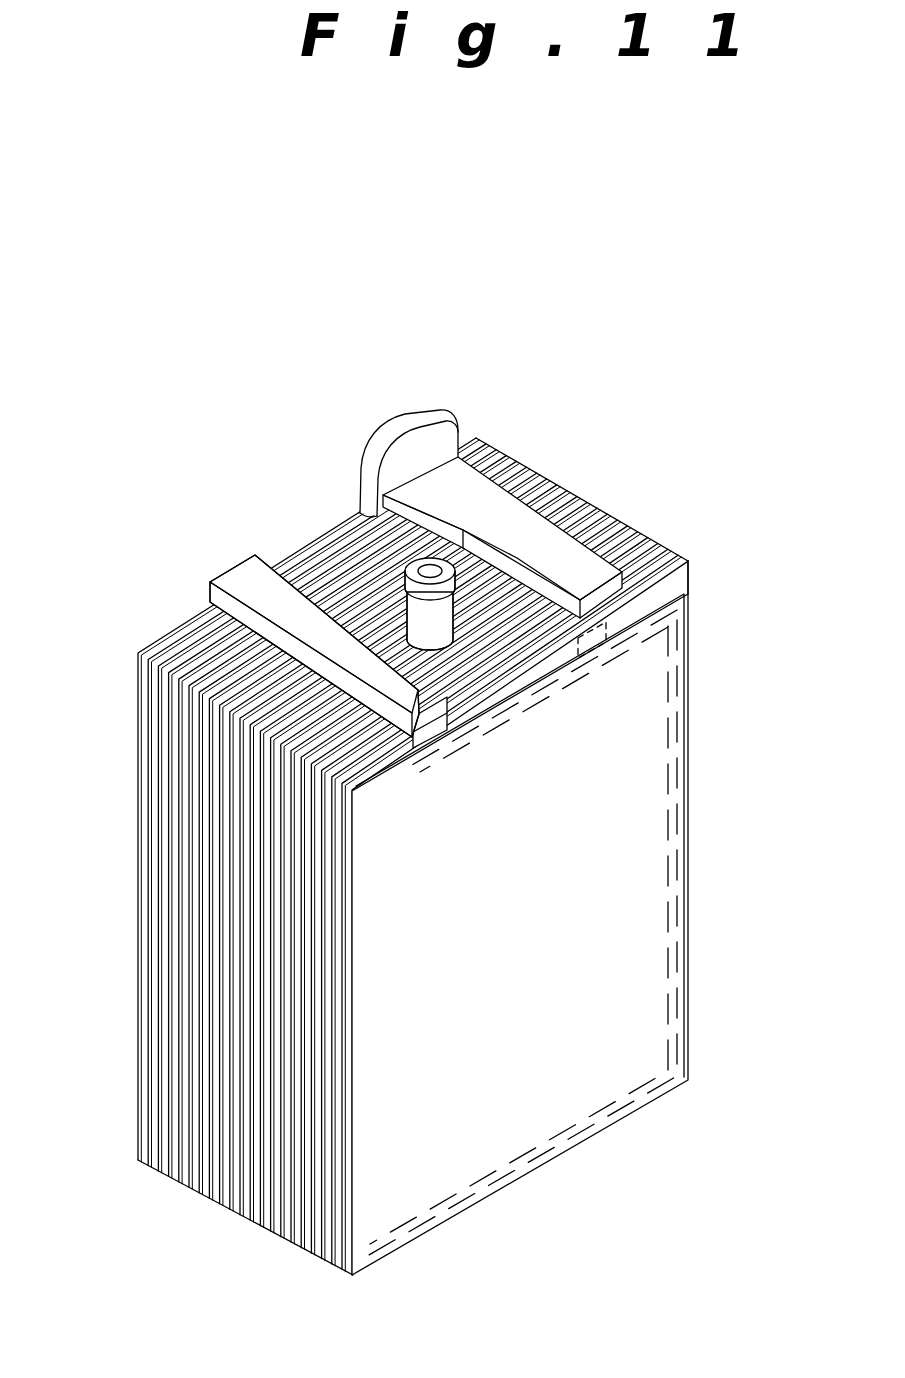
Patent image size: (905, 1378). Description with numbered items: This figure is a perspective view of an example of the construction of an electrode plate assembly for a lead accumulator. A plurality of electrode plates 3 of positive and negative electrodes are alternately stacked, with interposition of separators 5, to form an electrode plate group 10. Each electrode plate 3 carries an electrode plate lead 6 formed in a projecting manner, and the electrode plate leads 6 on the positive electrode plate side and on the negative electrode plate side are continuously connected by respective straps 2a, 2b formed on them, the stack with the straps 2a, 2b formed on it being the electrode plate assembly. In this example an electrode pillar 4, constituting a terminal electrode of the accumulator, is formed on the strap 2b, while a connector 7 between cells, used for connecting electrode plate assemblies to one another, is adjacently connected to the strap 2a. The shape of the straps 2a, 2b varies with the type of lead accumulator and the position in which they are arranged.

The electrode plate group 10 is at (130, 755).
The electrode plate 3 is at (617, 828).
The electrode plate lead 6 is at (445, 723).
The strap 2b is at (243, 577).
The strap 2a is at (445, 494).
The electrode pillar 4 is at (448, 617).
The connector 7 is at (403, 416).
The separator 5 is at (677, 582).